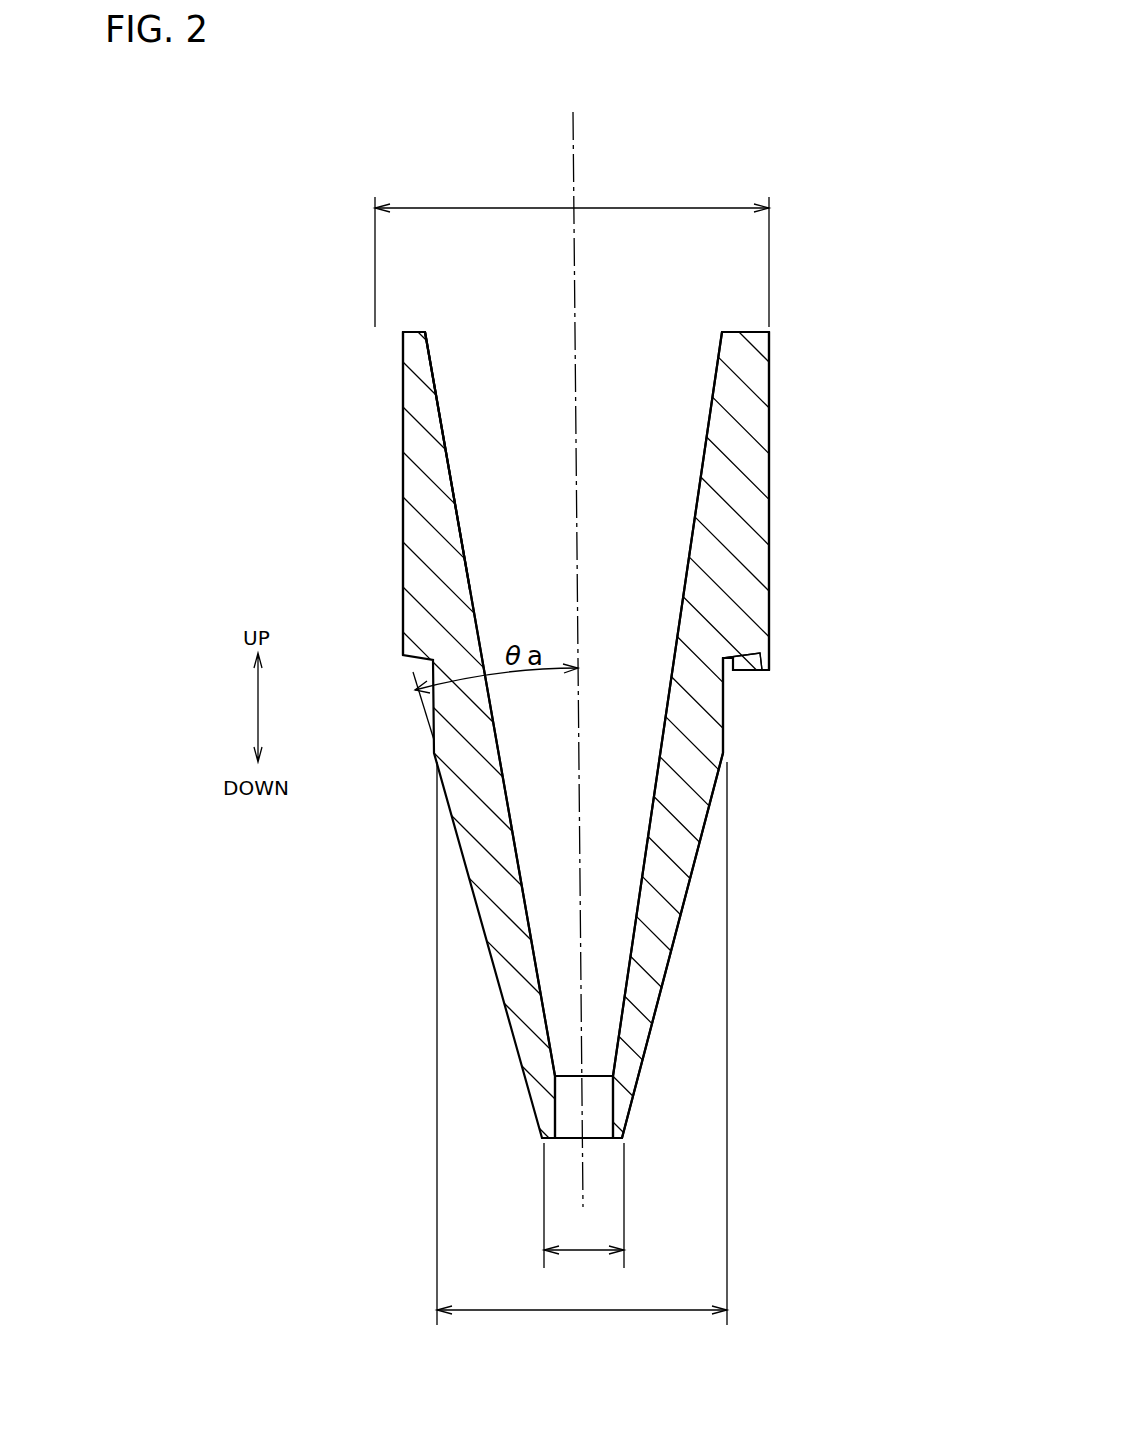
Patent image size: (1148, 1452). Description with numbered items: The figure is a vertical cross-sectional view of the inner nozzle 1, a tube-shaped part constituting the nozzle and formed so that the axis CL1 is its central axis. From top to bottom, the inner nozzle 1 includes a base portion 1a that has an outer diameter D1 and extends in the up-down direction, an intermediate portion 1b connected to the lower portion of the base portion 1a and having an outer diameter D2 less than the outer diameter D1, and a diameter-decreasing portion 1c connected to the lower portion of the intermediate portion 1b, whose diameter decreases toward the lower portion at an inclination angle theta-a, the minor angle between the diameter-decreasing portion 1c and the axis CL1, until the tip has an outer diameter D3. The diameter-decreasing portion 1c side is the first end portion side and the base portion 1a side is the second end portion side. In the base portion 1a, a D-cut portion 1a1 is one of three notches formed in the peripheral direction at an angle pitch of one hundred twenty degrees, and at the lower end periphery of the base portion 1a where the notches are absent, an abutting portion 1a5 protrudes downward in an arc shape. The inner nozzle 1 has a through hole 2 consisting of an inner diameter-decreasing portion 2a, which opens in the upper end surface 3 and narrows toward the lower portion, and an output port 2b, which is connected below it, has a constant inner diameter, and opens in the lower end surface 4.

The inner nozzle 1 is at (403, 397).
The base portion 1a is at (770, 450).
The D-cut portion 1a1 is at (403, 495).
The abutting portion 1a5 is at (768, 672).
The intermediate portion 1b is at (724, 713).
The diameter-decreasing portion 1c is at (668, 963).
The through hole 2 is at (434, 381).
The inner diameter-decreasing portion 2a is at (454, 500).
The output port 2b is at (556, 1112).
The upper end surface 3 is at (747, 330).
The lower end surface 4 is at (623, 1143).
The axis CL1 is at (575, 140).
The outer diameter of base portion D1 is at (572, 251).
The outer diameter of intermediate portion D2 is at (582, 1043).
The outer diameter of tip D3 is at (584, 1205).